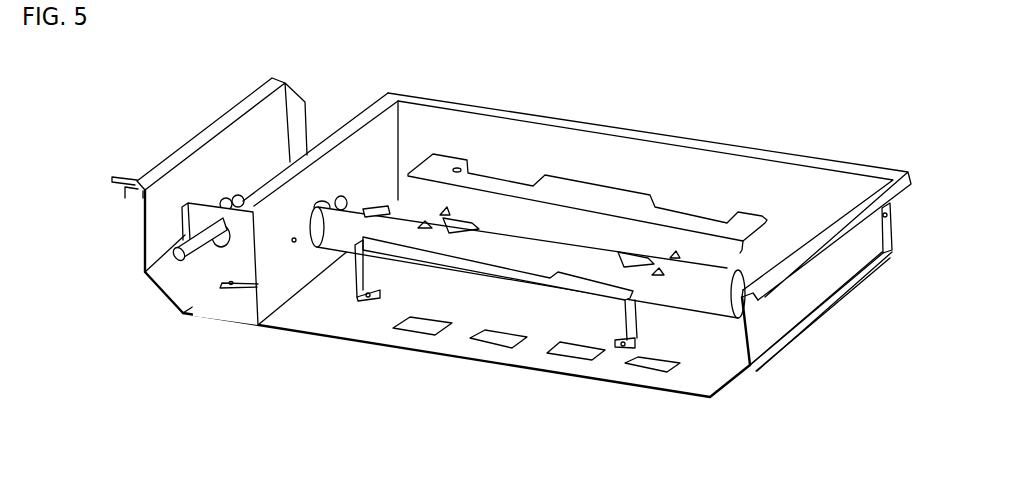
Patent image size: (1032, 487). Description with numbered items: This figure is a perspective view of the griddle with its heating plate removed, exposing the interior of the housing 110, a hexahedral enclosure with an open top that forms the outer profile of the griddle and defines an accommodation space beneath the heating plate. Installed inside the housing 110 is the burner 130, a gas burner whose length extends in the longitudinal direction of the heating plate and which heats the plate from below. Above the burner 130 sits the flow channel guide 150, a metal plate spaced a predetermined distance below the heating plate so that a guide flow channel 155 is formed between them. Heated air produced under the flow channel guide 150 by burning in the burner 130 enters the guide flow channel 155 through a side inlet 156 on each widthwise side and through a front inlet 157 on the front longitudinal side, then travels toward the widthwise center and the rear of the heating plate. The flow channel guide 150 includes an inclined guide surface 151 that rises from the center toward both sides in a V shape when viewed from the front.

The housing 110 is at (790, 300).
The burner 130 is at (697, 318).
The flow channel guide 150 is at (576, 238).
The guide surface 151 is at (483, 206).
The guide flow channel 155 is at (588, 233).
The side inlet 156 is at (592, 287).
The front inlet 157 is at (382, 210).